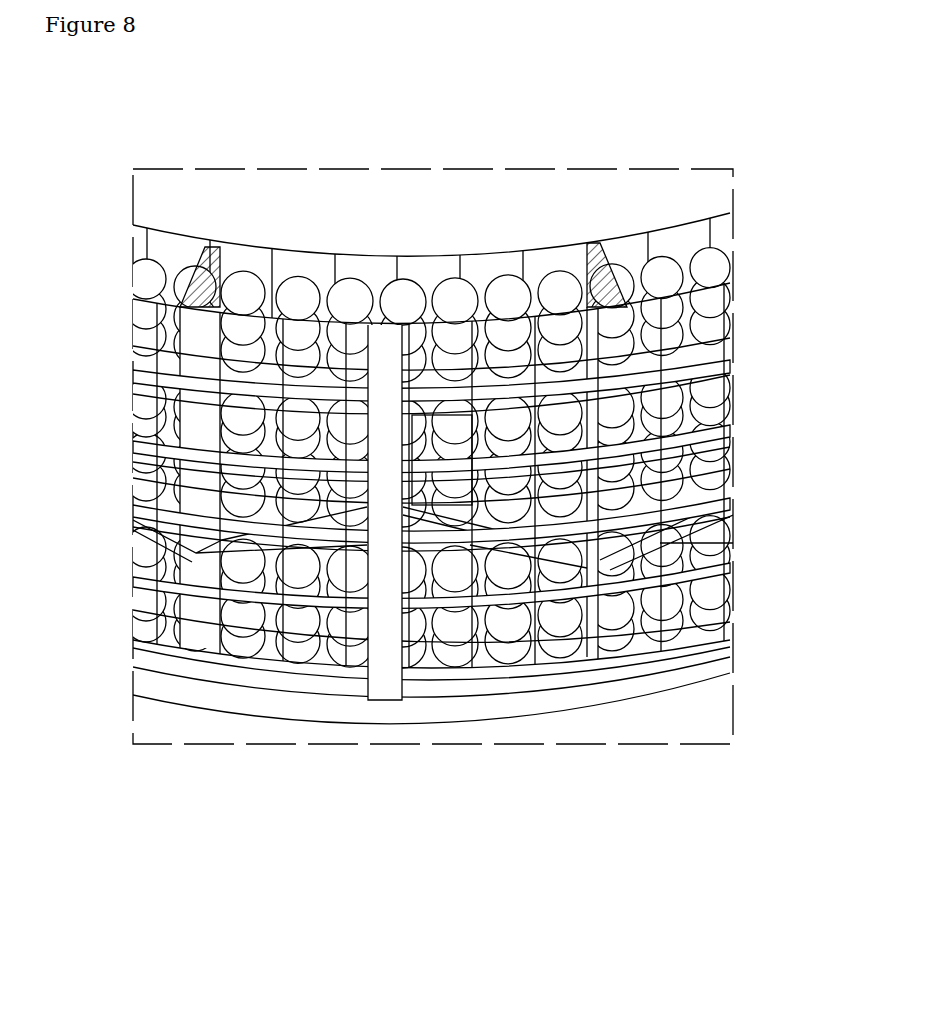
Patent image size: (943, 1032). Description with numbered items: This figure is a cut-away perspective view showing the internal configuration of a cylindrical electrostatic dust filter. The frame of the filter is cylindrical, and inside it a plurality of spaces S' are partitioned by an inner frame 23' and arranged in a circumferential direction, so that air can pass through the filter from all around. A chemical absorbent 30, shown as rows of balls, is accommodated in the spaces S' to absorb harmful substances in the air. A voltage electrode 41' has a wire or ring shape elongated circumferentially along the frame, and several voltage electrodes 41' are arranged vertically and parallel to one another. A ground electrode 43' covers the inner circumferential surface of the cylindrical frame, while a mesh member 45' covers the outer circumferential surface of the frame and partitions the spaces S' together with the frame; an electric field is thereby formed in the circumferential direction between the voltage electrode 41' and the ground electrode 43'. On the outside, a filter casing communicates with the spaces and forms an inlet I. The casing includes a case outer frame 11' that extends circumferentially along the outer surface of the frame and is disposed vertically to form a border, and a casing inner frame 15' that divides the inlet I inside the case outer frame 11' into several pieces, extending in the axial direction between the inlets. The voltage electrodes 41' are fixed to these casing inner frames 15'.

The case outer frame 11' is at (431, 726).
The casing inner frame 15' is at (390, 394).
The inner frame 23' is at (485, 378).
The chemical absorbent 30 is at (717, 270).
The voltage electrode 41' is at (462, 484).
The ground electrode 43' is at (431, 210).
The mesh member 45' is at (431, 233).
The space S' is at (436, 207).
The inlet I is at (433, 658).